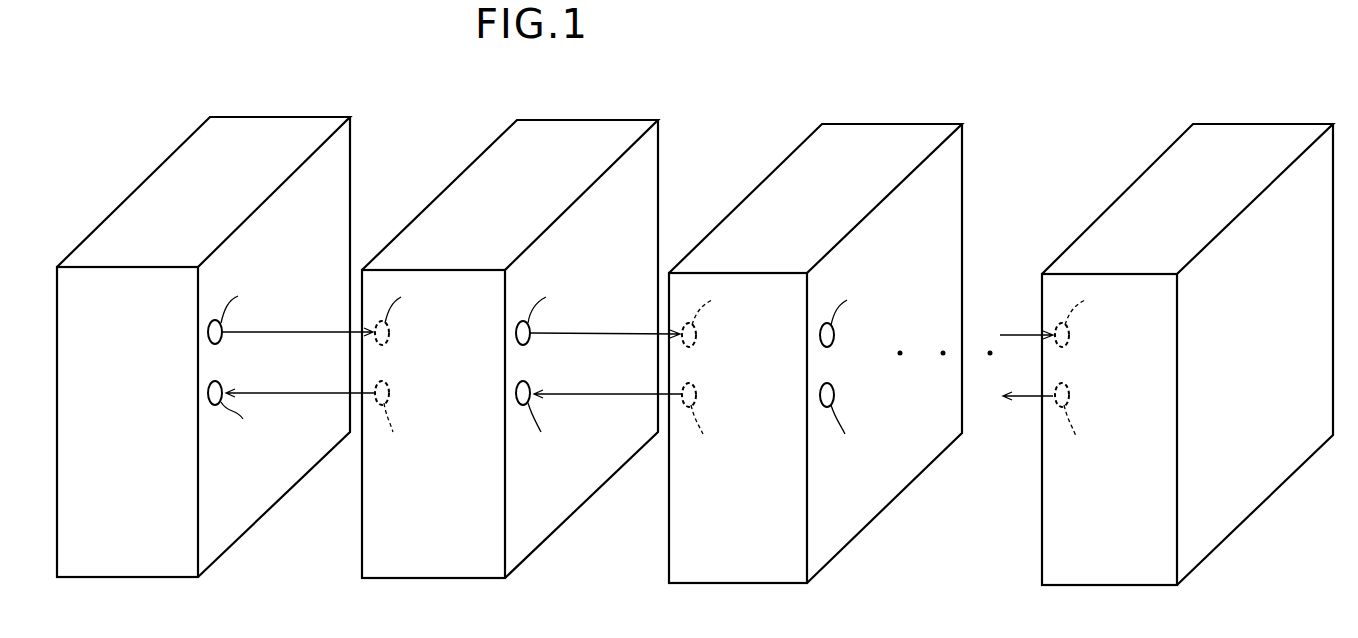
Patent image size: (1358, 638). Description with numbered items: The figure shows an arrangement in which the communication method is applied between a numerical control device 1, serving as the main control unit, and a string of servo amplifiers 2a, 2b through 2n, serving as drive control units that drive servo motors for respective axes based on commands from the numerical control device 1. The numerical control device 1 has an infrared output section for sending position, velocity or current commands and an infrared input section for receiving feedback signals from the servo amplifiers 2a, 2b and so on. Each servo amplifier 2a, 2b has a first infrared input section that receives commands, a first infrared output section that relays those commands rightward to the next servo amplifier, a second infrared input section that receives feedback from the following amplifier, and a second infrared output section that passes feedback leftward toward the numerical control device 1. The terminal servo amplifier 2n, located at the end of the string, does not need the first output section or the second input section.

The numerical control device 1 is at (328, 126).
The servo amplifier 2a is at (632, 125).
The servo amplifier 2b is at (930, 132).
The terminal servo amplifier 2n is at (1303, 133).